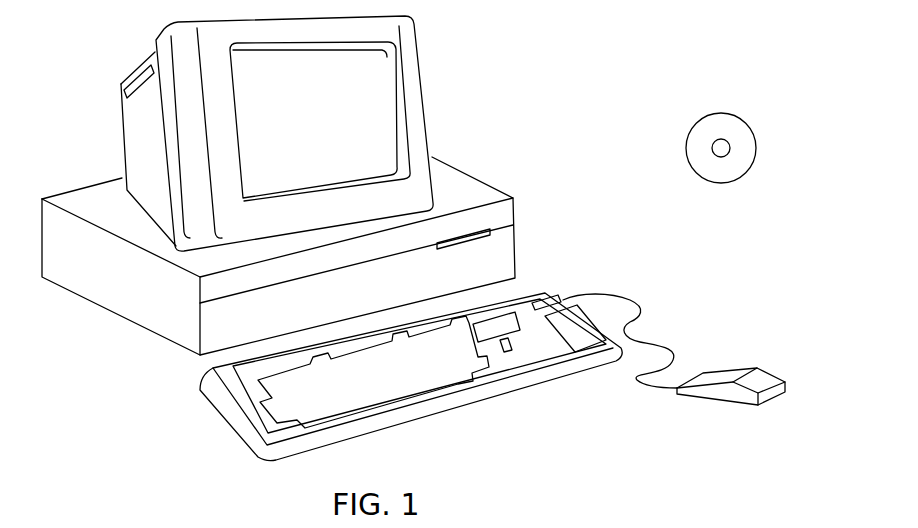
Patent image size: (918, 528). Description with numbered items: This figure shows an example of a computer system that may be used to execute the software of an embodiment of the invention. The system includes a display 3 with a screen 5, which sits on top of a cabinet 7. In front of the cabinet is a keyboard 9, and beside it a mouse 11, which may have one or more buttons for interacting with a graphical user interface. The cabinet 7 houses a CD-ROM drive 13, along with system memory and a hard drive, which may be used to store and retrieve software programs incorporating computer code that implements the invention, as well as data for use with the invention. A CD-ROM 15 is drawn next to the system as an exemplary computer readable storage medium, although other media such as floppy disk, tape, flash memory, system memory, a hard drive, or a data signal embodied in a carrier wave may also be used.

The display 3 is at (428, 133).
The screen 5 is at (387, 80).
The cabinet 7 is at (165, 339).
The keyboard 9 is at (415, 418).
The mouse 11 is at (777, 373).
The CD-ROM drive 13 is at (488, 232).
The CD-ROM 15 is at (738, 117).